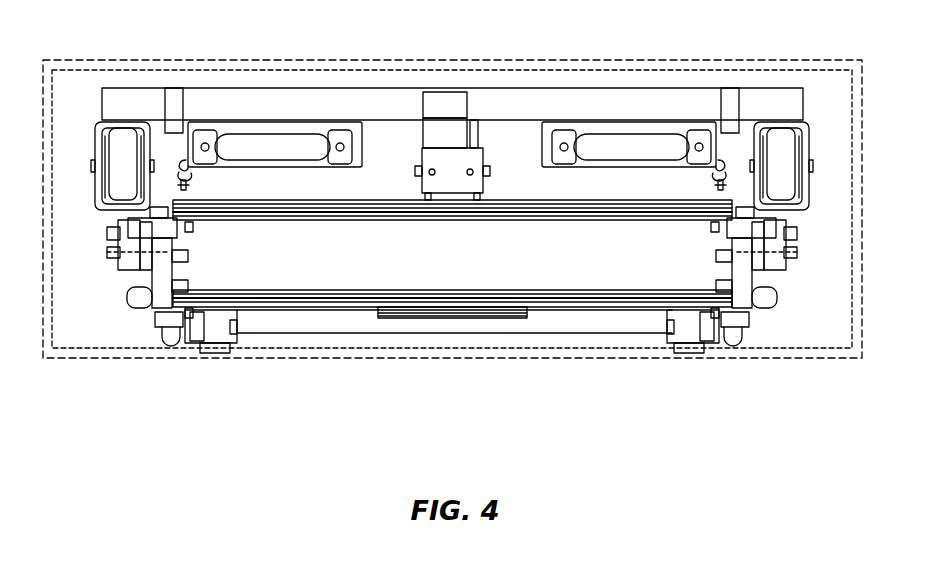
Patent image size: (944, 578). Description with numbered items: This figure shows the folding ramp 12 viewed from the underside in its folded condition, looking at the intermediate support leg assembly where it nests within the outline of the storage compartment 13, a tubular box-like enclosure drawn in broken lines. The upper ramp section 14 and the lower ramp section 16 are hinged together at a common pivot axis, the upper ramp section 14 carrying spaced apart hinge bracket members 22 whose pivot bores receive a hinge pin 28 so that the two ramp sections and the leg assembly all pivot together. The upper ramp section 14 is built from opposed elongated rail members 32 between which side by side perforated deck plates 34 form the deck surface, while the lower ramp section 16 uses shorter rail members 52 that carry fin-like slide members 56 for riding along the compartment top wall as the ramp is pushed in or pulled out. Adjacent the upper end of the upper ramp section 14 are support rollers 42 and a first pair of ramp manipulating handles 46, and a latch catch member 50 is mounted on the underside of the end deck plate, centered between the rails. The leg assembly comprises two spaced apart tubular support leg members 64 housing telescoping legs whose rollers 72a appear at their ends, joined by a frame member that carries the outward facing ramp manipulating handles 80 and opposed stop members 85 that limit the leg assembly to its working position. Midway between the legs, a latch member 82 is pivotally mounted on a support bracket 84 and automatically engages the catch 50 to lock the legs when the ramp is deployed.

The folding ramp 12 is at (786, 52).
The storage compartment 13 is at (258, 57).
The upper ramp section 14 is at (511, 338).
The lower ramp section 16 is at (411, 201).
The hinge bracket members 22 is at (152, 305).
The hinge pin 28 is at (112, 250).
The rail members 32 is at (168, 340).
The deck plates 34 is at (415, 220).
The support rollers 42 is at (215, 350).
The ramp manipulating handles 46 is at (128, 296).
The latch catch member 50 is at (410, 318).
The rail members 52 is at (188, 167).
The slide members 56 is at (197, 190).
The support leg members 64 is at (95, 153).
The rollers 72a is at (122, 130).
The ramp manipulating handles 80 is at (262, 167).
The latch member 82 is at (445, 92).
The support bracket 84 is at (485, 135).
The stop members 85 is at (177, 88).